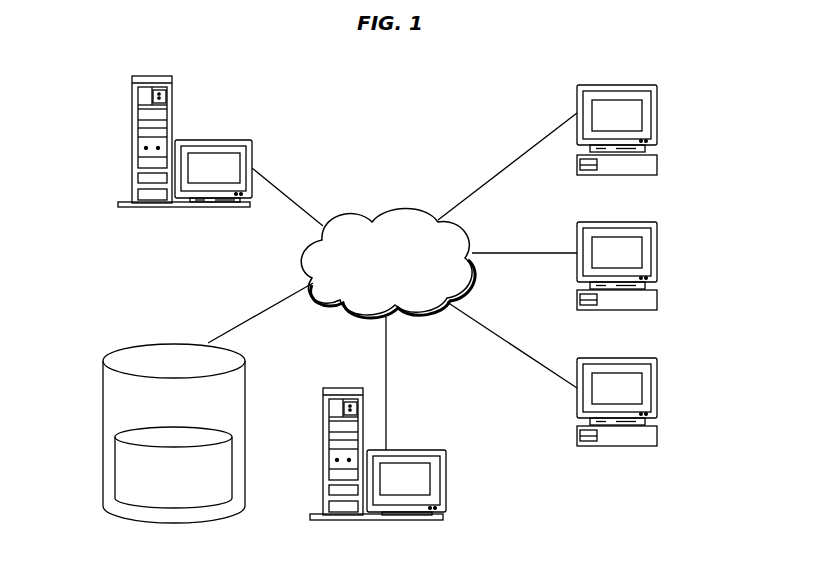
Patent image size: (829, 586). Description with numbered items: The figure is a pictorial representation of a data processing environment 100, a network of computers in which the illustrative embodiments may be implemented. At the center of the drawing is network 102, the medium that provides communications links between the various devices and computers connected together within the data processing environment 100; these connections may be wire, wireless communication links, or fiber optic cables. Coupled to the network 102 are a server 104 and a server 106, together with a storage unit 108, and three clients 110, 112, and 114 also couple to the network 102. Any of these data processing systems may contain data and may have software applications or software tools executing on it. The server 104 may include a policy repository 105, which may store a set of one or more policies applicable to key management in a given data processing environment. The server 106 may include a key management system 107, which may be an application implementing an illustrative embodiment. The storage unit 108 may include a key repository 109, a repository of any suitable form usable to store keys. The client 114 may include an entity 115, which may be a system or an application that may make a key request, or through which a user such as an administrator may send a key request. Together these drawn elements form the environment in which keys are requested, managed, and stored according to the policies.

The data processing environment 100 is at (78, 92).
The network 102 is at (375, 278).
The server 104 is at (194, 152).
The policy repository 105 is at (228, 130).
The server 106 is at (431, 463).
The key management system 107 is at (432, 483).
The storage unit 108 is at (162, 417).
The key repository 109 is at (162, 508).
The client 110 is at (654, 330).
The client 112 is at (654, 465).
The client 114 is at (651, 140).
The entity 115 is at (640, 122).